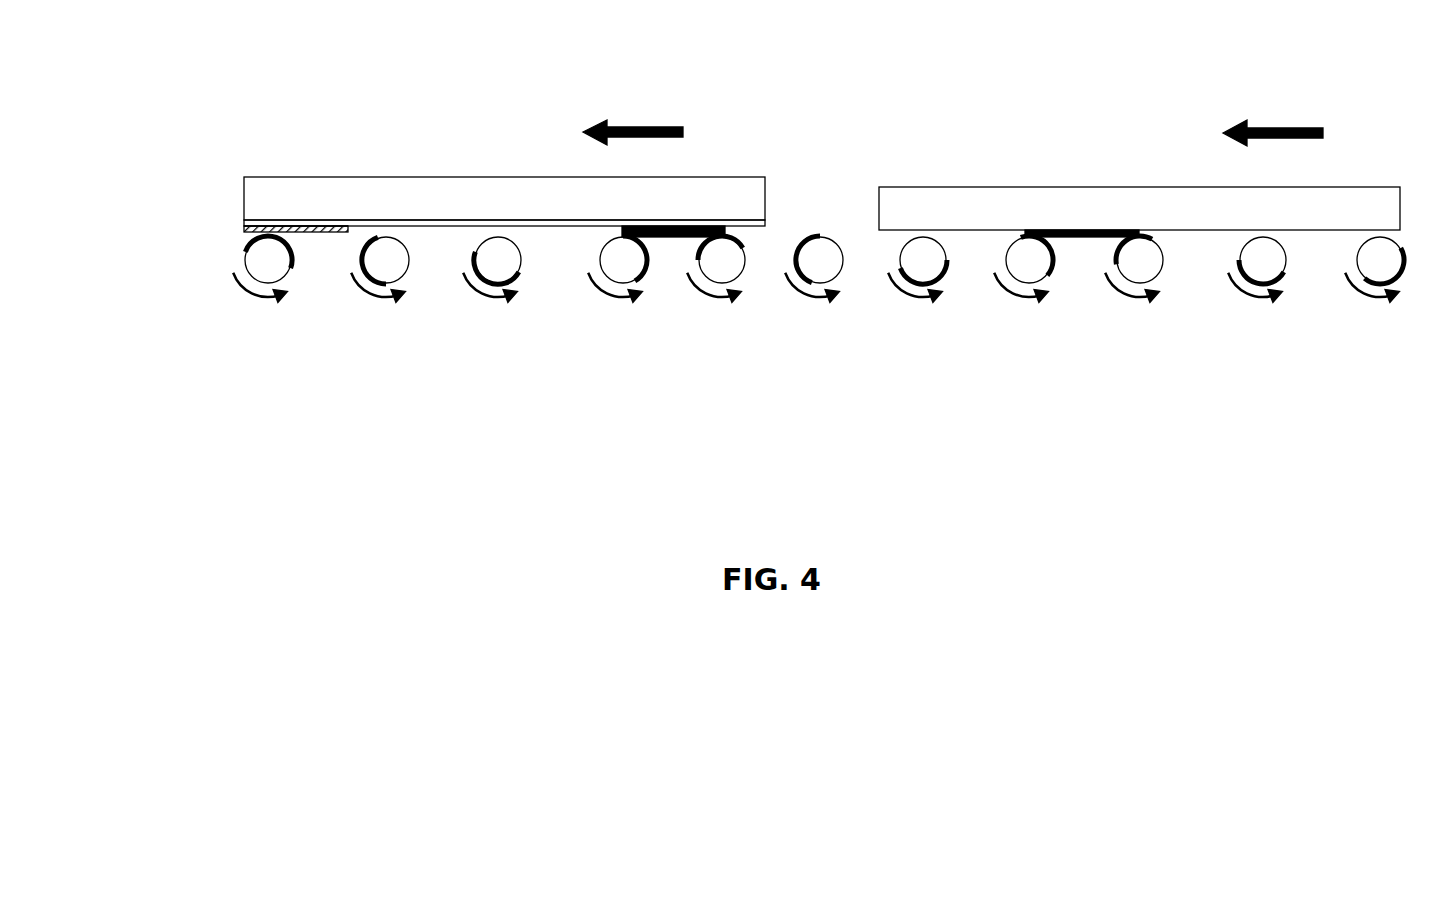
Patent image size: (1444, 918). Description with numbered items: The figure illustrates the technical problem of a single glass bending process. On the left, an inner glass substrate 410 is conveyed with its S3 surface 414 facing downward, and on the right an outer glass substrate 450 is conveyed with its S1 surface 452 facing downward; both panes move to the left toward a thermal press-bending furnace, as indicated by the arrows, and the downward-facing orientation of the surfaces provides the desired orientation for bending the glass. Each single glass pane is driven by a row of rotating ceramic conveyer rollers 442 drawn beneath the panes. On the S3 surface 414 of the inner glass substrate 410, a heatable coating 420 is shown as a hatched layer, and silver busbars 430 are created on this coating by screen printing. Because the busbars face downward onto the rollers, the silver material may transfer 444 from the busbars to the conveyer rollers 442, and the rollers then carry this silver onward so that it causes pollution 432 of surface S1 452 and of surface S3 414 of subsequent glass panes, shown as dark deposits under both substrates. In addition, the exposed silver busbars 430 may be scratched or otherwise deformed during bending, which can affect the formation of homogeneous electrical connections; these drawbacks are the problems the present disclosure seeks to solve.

The inner glass substrate 410 is at (304, 187).
The S3 surface 414 is at (540, 219).
The heatable coating 420 is at (243, 226).
The silver busbars 430 is at (244, 235).
The pollution 432 is at (677, 237).
The ceramic conveyer rollers 442 is at (380, 273).
The transfer 444 is at (360, 268).
The outer glass substrate 450 is at (963, 208).
The S1 surface 452 is at (1148, 232).